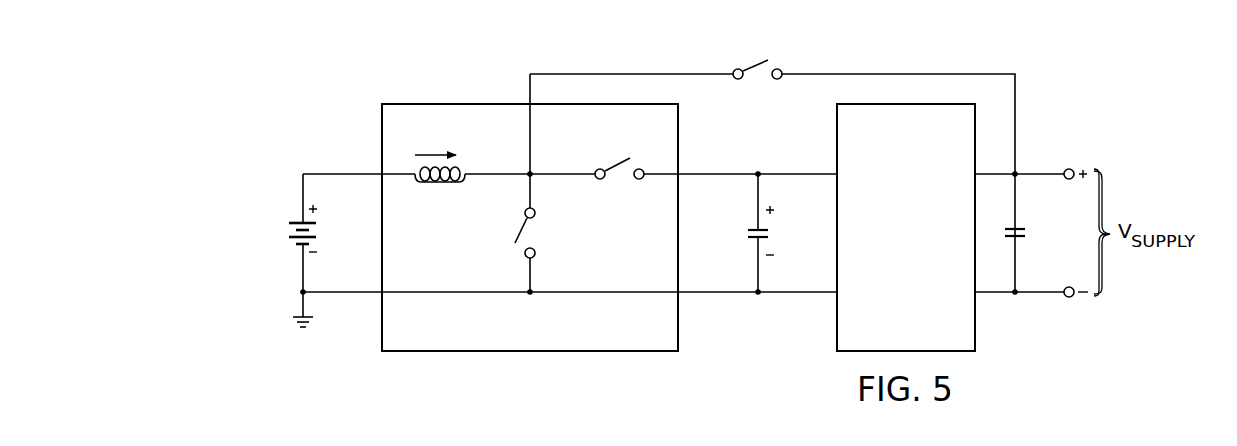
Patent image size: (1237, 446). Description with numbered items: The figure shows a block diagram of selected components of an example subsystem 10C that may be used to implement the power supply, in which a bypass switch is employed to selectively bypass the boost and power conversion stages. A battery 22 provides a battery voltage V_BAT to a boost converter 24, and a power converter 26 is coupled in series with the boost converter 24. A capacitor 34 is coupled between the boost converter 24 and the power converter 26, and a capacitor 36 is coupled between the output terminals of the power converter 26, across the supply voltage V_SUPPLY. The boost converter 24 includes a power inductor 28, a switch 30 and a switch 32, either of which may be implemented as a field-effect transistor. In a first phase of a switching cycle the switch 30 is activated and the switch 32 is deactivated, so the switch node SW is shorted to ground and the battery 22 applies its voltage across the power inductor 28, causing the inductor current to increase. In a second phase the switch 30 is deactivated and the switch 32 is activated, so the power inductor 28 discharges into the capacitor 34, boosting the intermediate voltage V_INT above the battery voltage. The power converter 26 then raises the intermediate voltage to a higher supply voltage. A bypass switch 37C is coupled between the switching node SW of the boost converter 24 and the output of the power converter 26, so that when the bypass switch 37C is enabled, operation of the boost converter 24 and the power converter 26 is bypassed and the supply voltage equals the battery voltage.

The subsystem 10C is at (1070, 71).
The battery 22 is at (290, 229).
The boost converter 24 is at (440, 100).
The power converter 26 is at (918, 258).
The power inductor 28 is at (446, 184).
The switch 30 is at (520, 230).
The switch 32 is at (618, 163).
The capacitor 34 is at (746, 232).
The capacitor 36 is at (1027, 233).
The bypass switch 37C is at (756, 62).